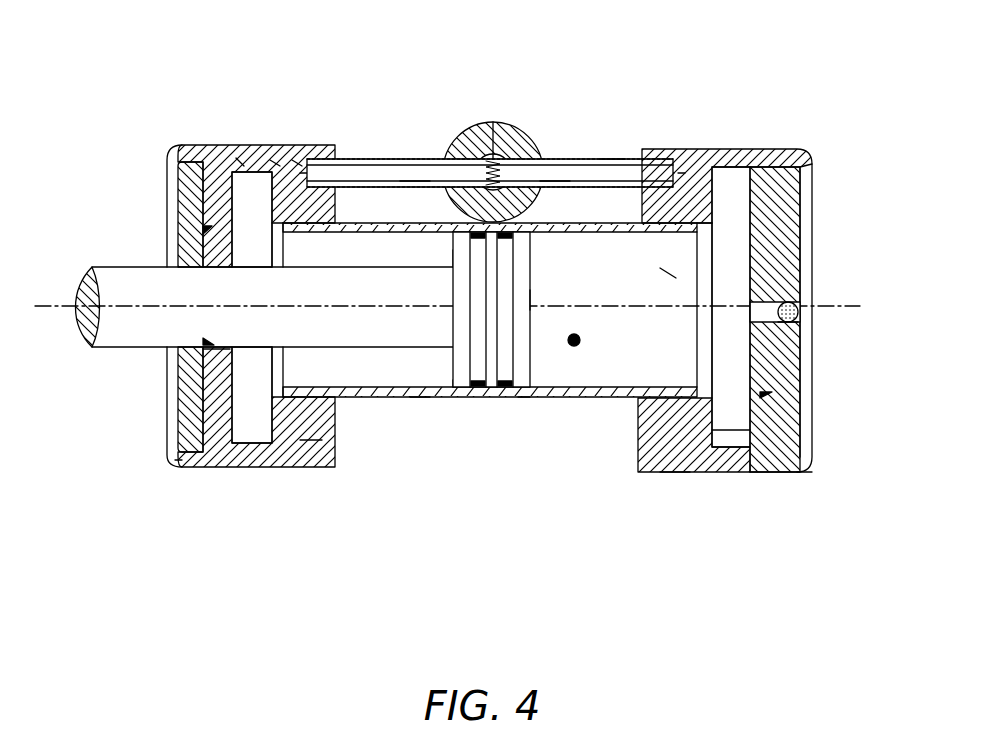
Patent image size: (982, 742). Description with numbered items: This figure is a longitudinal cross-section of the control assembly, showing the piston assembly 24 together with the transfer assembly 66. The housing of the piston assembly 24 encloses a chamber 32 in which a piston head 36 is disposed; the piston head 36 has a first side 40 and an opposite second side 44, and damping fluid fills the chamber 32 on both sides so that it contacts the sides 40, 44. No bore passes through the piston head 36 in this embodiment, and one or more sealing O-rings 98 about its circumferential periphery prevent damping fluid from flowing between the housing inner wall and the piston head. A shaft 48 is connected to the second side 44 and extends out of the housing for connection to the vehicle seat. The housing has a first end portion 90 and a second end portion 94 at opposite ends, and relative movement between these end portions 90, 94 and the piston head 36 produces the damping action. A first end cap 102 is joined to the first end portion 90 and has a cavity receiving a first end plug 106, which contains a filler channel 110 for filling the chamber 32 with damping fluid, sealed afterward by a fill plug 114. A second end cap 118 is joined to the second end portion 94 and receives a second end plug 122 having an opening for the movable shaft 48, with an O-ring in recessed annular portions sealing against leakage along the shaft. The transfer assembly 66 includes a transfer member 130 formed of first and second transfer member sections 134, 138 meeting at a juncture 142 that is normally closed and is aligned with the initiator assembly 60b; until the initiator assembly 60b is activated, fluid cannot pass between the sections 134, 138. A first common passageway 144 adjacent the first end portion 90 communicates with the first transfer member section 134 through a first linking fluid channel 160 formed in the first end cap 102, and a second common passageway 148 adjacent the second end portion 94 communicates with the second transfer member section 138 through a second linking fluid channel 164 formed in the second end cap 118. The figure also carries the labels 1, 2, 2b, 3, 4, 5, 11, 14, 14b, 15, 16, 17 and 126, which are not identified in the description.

The cylinder tube 1 is at (362, 399).
The end cap 2 is at (278, 470).
The end cap (right) 2b is at (676, 474).
The piston 3 is at (531, 399).
The end cap outer wall 4 is at (188, 470).
The end cap outer wall (right) 5 is at (799, 474).
The O-ring seat 11 is at (799, 327).
The seal 14 is at (212, 402).
The seal (right) 14b is at (763, 407).
The rod seal 15 is at (200, 370).
The piston seals 16 is at (474, 399).
The fluid 17 is at (574, 348).
The piston assembly 24 is at (420, 399).
The chamber 32 is at (668, 273).
The piston head 36 is at (461, 380).
The first side 40 is at (531, 300).
The second side 44 is at (452, 255).
The shaft 48 is at (108, 270).
The initiator assembly 60b is at (530, 138).
The transfer assembly 66 is at (610, 157).
The first end portion 90 is at (683, 190).
The second end portion 94 is at (297, 157).
The sealing ring 98 is at (522, 400).
The first end cap 102 is at (737, 460).
The first end plug 106 is at (783, 247).
The filler channel 110 is at (790, 395).
The fill plug 114 is at (797, 304).
The second end cap 118 is at (310, 452).
The second end plug 122 is at (188, 166).
The rod seal 126 is at (200, 350).
The transfer member 130 is at (437, 157).
The first transfer member section 134 is at (553, 181).
The second transfer member section 138 is at (412, 181).
The juncture 142 is at (493, 121).
The first common passageway 144 is at (742, 185).
The second common passageway 148 is at (240, 160).
The first linking fluid channel 160 is at (714, 172).
The second linking fluid channel 164 is at (275, 158).